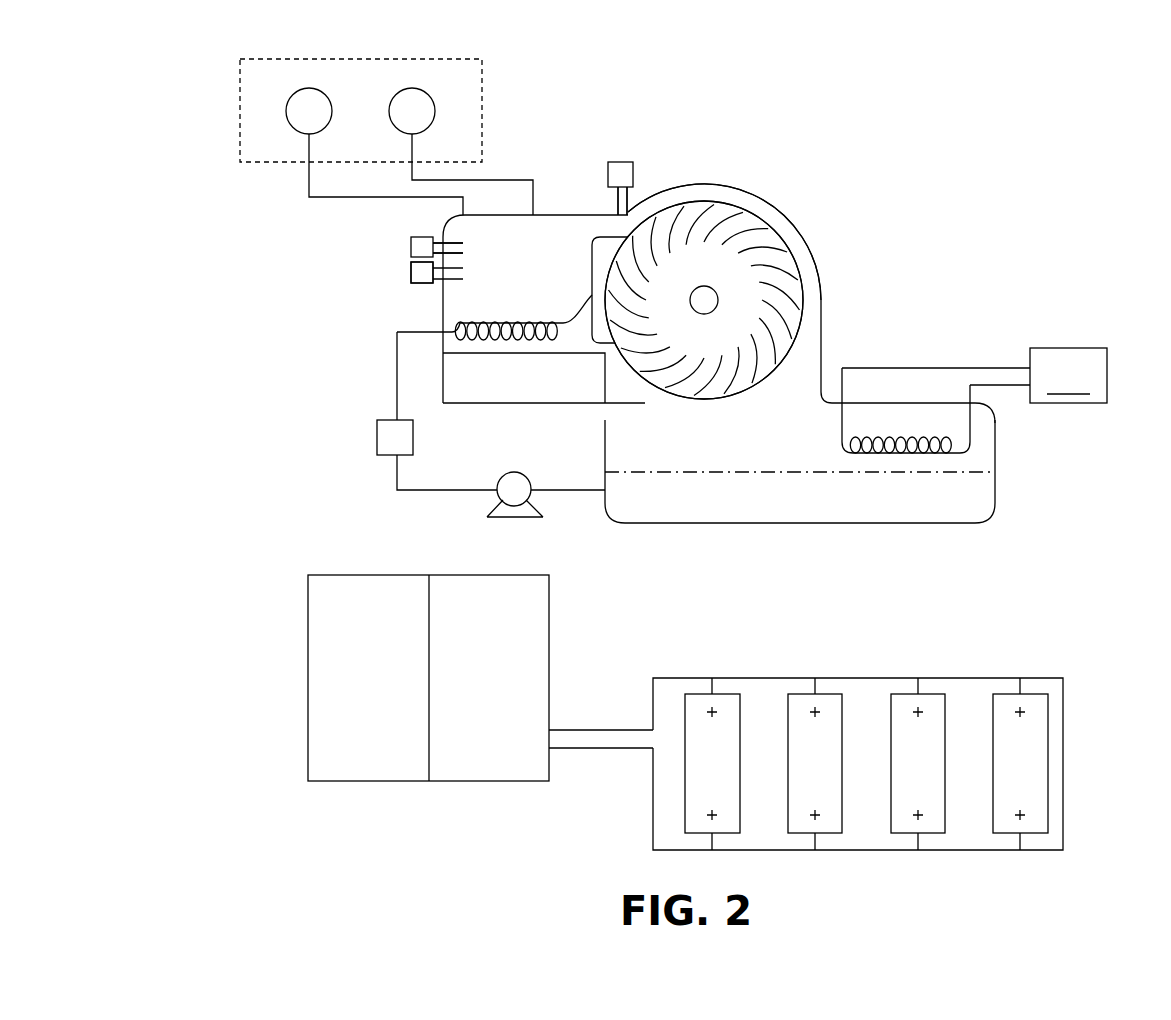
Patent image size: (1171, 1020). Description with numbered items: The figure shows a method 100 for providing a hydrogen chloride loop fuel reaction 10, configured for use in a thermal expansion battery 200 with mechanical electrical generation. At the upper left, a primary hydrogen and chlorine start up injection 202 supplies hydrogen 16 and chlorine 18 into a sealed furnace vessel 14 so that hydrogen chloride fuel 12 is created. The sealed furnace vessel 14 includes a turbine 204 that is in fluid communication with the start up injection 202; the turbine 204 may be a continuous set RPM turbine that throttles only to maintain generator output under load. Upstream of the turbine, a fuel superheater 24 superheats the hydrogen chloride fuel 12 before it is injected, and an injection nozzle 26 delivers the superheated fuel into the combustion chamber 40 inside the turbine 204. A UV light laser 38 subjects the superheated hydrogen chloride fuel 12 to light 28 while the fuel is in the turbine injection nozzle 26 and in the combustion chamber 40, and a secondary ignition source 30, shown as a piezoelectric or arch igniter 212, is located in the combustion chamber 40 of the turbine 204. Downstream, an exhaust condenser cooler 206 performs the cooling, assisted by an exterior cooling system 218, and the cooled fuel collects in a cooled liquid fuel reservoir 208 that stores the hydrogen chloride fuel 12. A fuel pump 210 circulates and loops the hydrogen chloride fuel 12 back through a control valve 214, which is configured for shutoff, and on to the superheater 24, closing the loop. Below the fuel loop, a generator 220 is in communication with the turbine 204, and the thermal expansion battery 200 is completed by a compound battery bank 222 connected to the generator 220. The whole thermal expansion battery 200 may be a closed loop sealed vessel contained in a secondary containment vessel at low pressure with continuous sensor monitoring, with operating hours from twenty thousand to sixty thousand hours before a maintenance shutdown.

The hydrogen chloride loop fuel reaction 10 is at (870, 60).
The method for providing hydrogen chloride loop fuel reaction 100 is at (724, 242).
The hydrogen chloride fuel 12 is at (840, 290).
The sealed furnace vessel 14 is at (828, 208).
The hydrogen 16 is at (325, 94).
The chlorine 18 is at (428, 94).
The fuel superheater 24 is at (514, 326).
The injection nozzle 26 is at (592, 270).
The light 28 is at (460, 238).
The secondary ignition source 30 is at (406, 271).
The UV light laser 38 is at (407, 243).
The combustion chamber 40 is at (557, 214).
The thermal expansion battery 200 is at (1030, 606).
The primary hydrogen and chlorine start up injection 202 is at (483, 58).
The turbine 204 is at (709, 196).
The exhaust condenser cooler 206 is at (1003, 447).
The cooled liquid fuel reservoir 208 is at (1003, 490).
The fuel pump 210 is at (498, 497).
The piezoelectric or arch igniter 212 is at (422, 272).
The control valve 214 is at (377, 437).
The exterior cooling system 218 is at (974, 375).
The generator 220 is at (291, 603).
The compound battery bank 222 is at (1056, 719).